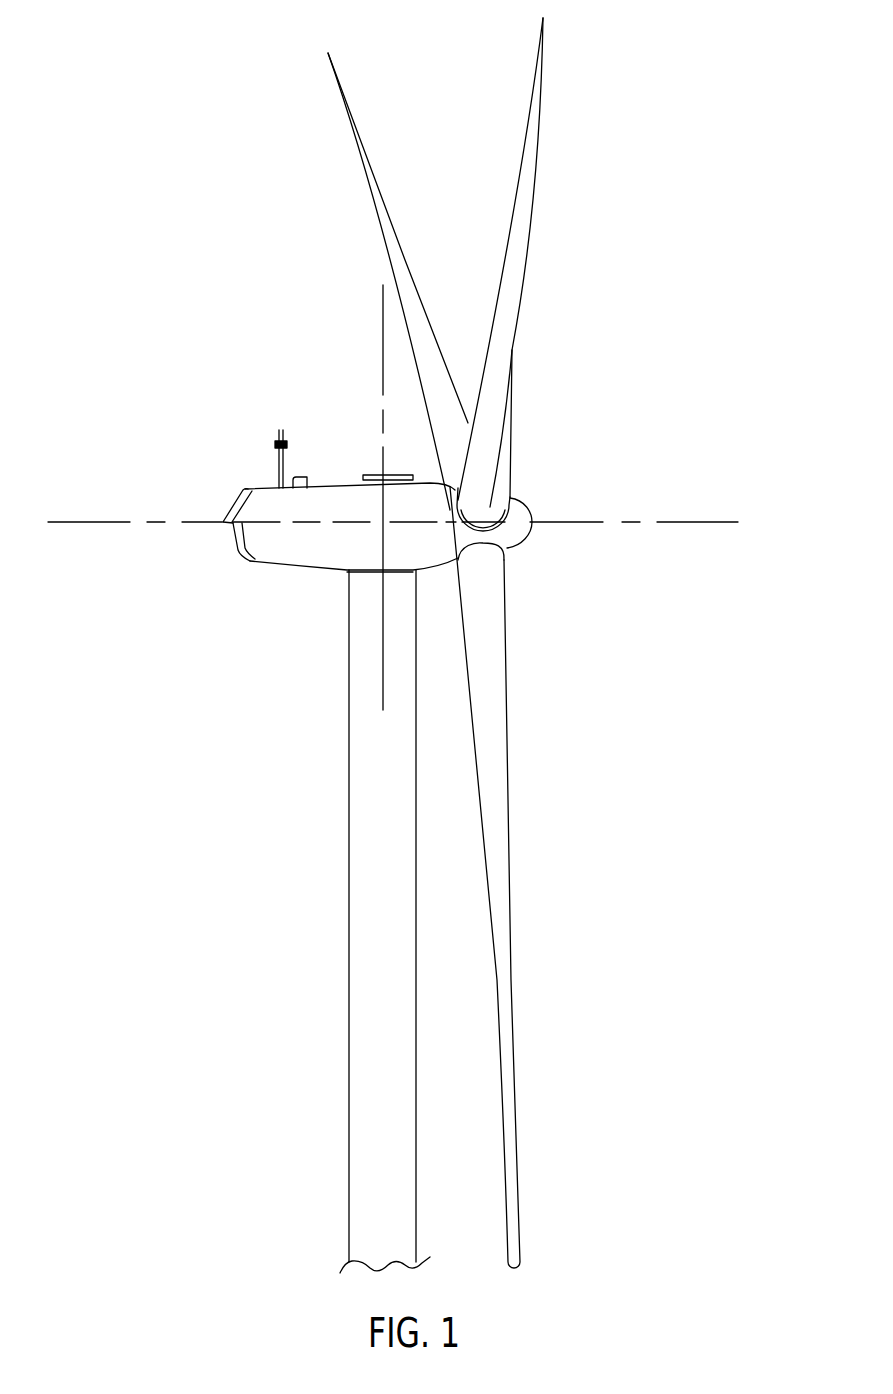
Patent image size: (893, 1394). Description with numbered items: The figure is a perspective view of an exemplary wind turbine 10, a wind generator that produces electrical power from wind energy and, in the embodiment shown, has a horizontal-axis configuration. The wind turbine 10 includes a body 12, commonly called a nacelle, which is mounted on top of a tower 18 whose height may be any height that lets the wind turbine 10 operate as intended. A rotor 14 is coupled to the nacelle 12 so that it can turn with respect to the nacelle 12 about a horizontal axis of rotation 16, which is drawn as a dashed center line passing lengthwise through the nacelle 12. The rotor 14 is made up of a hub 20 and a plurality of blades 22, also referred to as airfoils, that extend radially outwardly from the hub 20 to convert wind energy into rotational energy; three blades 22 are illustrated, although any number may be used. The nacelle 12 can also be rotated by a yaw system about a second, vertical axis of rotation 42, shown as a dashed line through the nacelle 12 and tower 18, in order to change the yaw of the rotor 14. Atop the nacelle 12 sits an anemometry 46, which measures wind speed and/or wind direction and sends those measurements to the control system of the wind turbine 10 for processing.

The wind turbine 10 is at (398, 645).
The body 12 is at (285, 574).
The rotor 14 is at (472, 643).
The axis of rotation 16 is at (683, 523).
The tower 18 is at (349, 863).
The hub 20 is at (529, 536).
The blades 22 is at (368, 142).
The axis of rotation 42 is at (382, 309).
The anemometry 46 is at (275, 445).